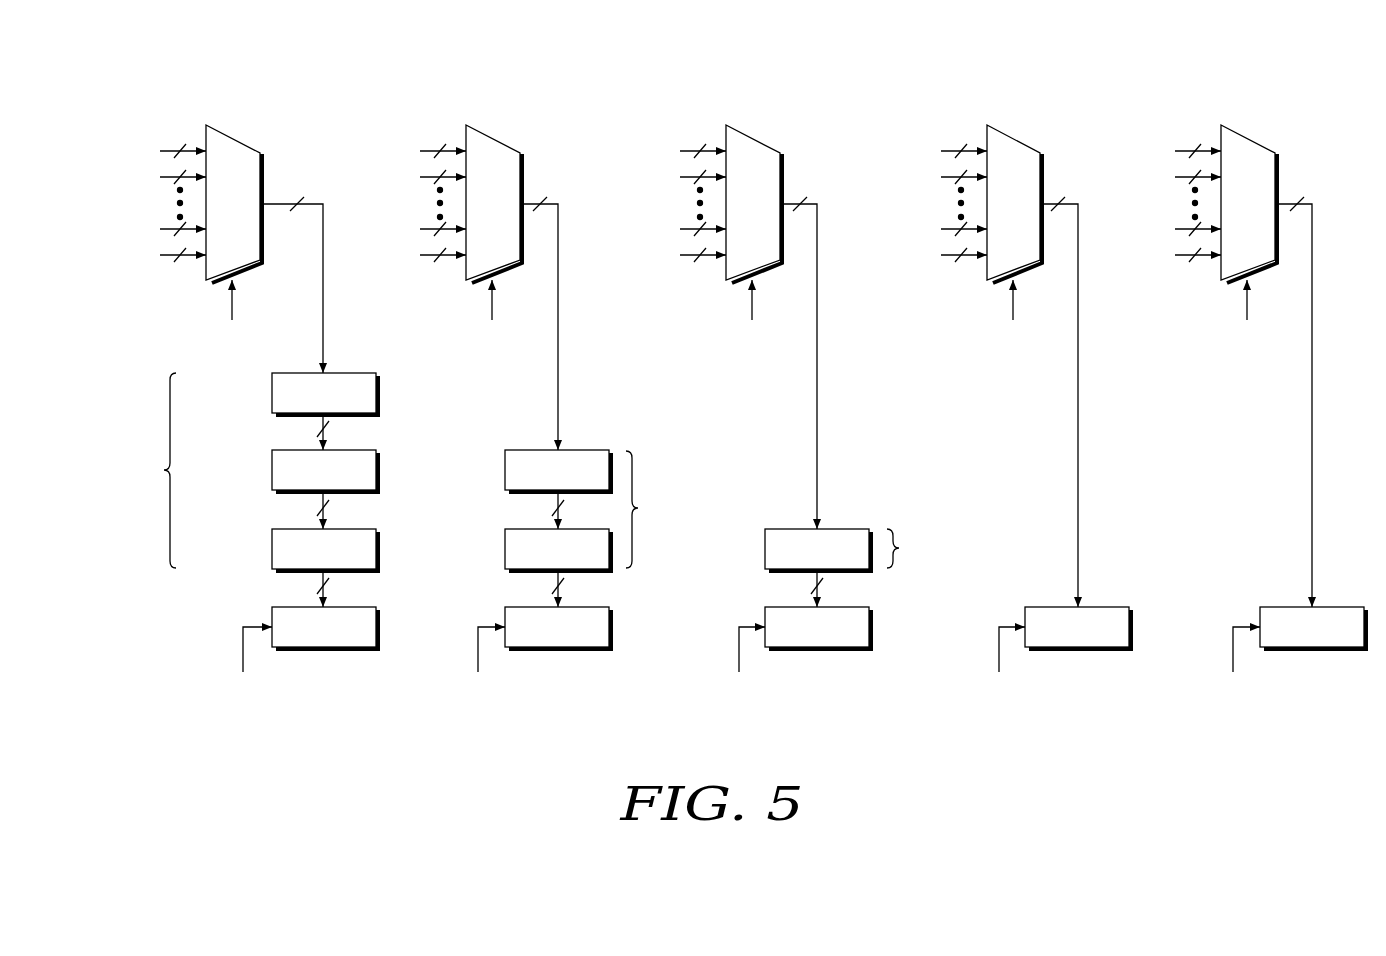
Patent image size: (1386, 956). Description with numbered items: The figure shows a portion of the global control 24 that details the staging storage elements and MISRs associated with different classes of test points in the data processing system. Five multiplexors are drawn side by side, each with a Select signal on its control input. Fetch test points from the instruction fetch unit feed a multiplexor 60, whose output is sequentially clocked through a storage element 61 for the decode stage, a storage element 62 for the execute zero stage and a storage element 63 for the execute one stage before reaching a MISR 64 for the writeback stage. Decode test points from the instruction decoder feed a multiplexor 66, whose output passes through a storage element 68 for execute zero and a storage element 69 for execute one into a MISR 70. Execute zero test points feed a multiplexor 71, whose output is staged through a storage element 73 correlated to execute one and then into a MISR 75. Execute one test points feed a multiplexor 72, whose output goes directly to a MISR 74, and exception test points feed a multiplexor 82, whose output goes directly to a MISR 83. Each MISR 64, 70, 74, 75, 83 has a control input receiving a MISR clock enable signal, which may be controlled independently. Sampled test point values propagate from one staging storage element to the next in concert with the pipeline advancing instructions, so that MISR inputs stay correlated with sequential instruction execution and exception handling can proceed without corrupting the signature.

The global control 24 is at (1260, 68).
The multiplexor 60 is at (235, 135).
The storage element 61 is at (350, 372).
The storage element 62 is at (350, 449).
The storage element 63 is at (350, 528).
The MISR 64 is at (350, 606).
The multiplexor 66 is at (495, 135).
The storage element 68 is at (583, 449).
The storage element 69 is at (583, 528).
The MISR 70 is at (583, 606).
The multiplexor 71 is at (755, 135).
The multiplexor 72 is at (1015, 135).
The storage element 73 is at (843, 528).
The MISR 74 is at (1104, 606).
The MISR 75 is at (843, 606).
The multiplexor 82 is at (1250, 135).
The MISR 83 is at (1338, 606).